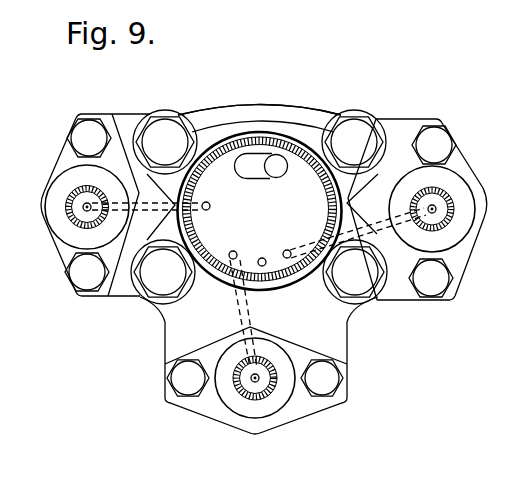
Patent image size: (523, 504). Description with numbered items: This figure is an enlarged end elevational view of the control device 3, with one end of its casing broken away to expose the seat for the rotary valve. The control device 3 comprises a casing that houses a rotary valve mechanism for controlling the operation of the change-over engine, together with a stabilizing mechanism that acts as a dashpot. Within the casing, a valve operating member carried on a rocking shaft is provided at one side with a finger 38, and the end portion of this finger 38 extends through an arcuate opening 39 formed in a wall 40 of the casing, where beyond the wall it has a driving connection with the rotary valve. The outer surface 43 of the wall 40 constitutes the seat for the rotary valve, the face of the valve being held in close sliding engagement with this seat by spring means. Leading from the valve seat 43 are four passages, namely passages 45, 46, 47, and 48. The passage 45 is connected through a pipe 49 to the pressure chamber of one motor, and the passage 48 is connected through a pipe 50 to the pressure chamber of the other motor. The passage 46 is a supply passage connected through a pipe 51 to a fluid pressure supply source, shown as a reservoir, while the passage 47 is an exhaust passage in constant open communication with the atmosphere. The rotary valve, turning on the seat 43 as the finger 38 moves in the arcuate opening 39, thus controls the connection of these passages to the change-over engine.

The control device 3 is at (281, 103).
The finger 38 is at (278, 165).
The arcuate opening 39 is at (247, 160).
The wall 40 is at (222, 162).
The outer surface 43 is at (303, 165).
The passage 45 is at (236, 252).
The supply passage 46 is at (209, 208).
The exhaust passage 47 is at (264, 259).
The passage 48 is at (289, 251).
The pipe 49 is at (249, 400).
The pipe 50 is at (442, 201).
The pipe 51 is at (68, 196).